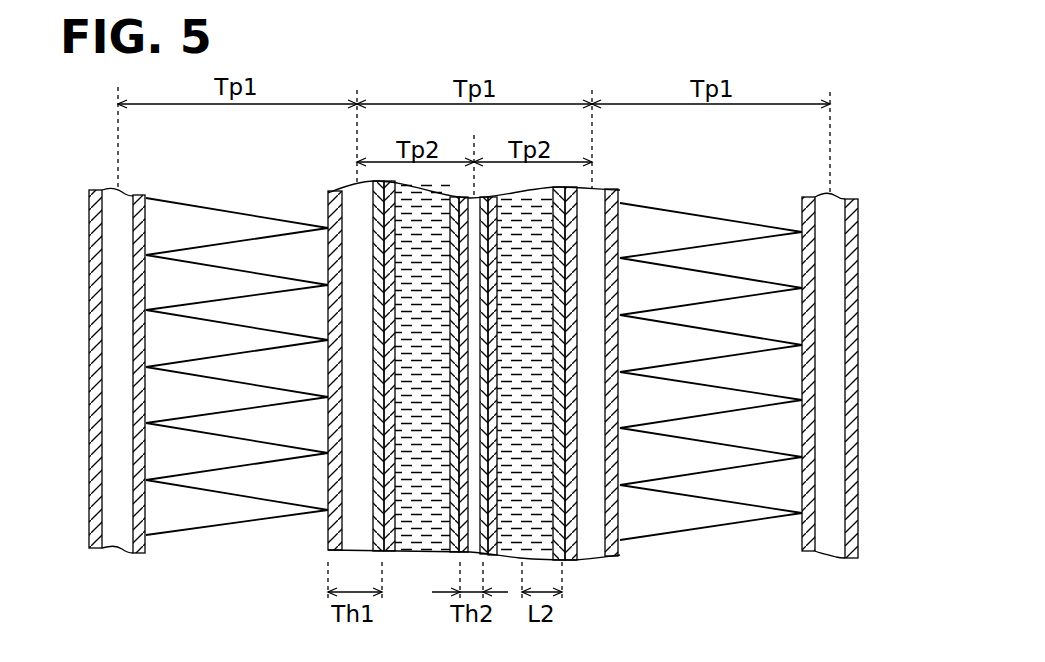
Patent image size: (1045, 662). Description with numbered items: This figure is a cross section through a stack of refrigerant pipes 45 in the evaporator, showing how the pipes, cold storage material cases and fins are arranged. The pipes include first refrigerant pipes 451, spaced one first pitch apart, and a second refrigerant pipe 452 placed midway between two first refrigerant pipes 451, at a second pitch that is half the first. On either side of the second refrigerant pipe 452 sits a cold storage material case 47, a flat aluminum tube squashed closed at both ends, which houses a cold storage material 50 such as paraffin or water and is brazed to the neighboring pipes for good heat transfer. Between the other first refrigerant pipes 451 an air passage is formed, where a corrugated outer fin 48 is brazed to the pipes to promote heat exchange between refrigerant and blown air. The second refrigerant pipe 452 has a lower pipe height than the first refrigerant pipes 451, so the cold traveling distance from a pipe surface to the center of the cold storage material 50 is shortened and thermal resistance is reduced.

The refrigerant pipe 45 is at (474, 409).
The first refrigerant pipe 451 is at (338, 322).
The second refrigerant pipe 452 is at (472, 508).
The cold storage material case 47 is at (387, 383).
The outer fin 48 is at (218, 301).
The cold storage material 50 is at (408, 452).